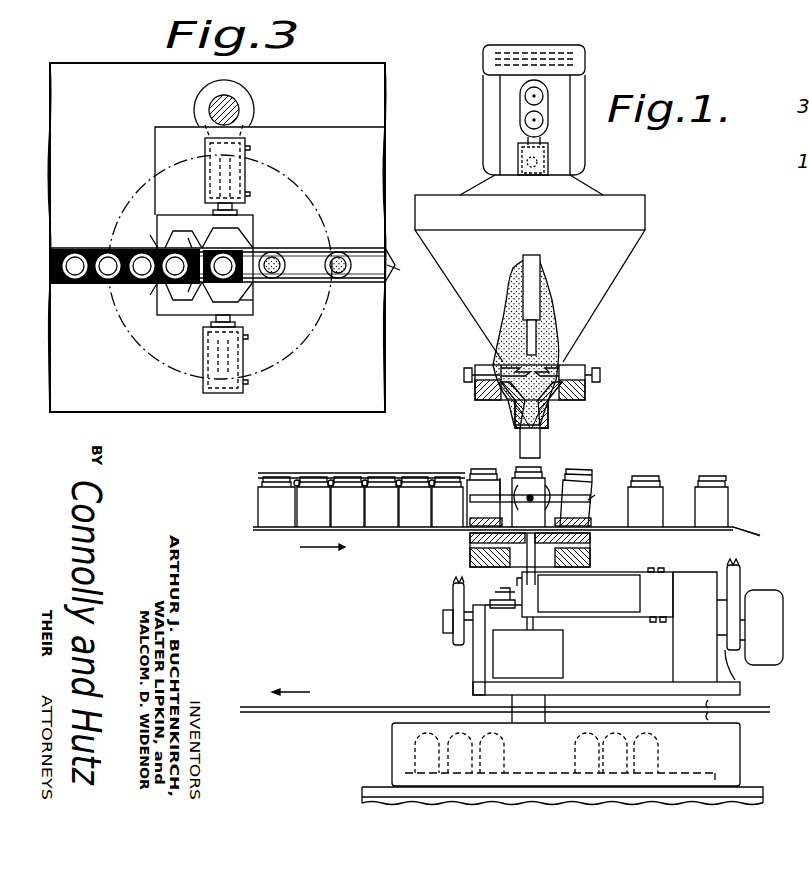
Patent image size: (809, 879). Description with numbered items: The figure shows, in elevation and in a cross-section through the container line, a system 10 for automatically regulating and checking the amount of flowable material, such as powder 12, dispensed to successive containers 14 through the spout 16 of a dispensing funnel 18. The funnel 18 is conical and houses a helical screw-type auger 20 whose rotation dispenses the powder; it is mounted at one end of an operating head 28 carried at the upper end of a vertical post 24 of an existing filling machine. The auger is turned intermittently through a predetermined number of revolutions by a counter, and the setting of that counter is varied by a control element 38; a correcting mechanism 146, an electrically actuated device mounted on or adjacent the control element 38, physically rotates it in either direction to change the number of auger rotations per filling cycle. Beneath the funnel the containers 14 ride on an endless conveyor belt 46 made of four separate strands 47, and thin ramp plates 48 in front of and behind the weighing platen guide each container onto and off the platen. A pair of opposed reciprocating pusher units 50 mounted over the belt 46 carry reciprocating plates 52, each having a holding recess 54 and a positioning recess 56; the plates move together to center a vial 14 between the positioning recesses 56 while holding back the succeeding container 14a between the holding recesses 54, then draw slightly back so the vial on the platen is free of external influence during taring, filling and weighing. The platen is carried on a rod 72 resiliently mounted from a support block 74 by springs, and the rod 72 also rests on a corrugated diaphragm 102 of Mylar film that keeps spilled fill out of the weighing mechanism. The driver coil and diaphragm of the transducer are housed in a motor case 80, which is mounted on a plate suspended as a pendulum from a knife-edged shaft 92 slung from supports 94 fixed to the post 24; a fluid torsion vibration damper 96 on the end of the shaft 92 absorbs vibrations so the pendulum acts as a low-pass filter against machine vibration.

In FIG. 1, the system 10 is at (348, 618).
In FIG. 1, the powder 12 is at (547, 350).
In FIG. 3, the container 14 is at (240, 246).
In FIG. 1, the container 14 is at (519, 468).
In FIG. 3, the succeeding container 14a is at (170, 247).
In FIG. 1, the succeeding container 14a is at (475, 469).
In FIG. 1, the spout 16 is at (552, 412).
In FIG. 3, the dispensing funnel 18 is at (320, 327).
In FIG. 1, the dispensing funnel 18 is at (622, 252).
In FIG. 1, the auger 20 is at (517, 400).
In FIG. 3, the post 24 is at (240, 112).
In FIG. 1, the post 24 is at (500, 705).
In FIG. 1, the operating head 28 is at (584, 88).
In FIG. 1, the control element 38 is at (525, 120).
In FIG. 3, the endless conveyor belt 46 is at (372, 248).
In FIG. 1, the endless conveyor belt 46 is at (335, 536).
In FIG. 3, the strands 47 is at (407, 269).
In FIG. 1, the strands 47 is at (733, 531).
In FIG. 3, the ramp plates 48 is at (150, 284).
In FIG. 1, the ramp plates 48 is at (480, 526).
In FIG. 3, the pusher units 50 is at (246, 177).
In FIG. 1, the pusher units 50 is at (547, 490).
In FIG. 3, the reciprocating plates 52 is at (253, 308).
In FIG. 1, the reciprocating plates 52 is at (571, 498).
In FIG. 3, the holding recess 54 is at (150, 235).
In FIG. 3, the positioning recess 56 is at (192, 238).
In FIG. 1, the rod 72 is at (545, 596).
In FIG. 1, the support block 74 is at (686, 580).
In FIG. 1, the motor case 80 is at (565, 664).
In FIG. 1, the knife-edged shaft 92 is at (443, 620).
In FIG. 1, the supports 94 is at (452, 585).
In FIG. 1, the vibration damper 96 is at (783, 658).
In FIG. 1, the corrugated diaphragm 102 is at (560, 558).
In FIG. 1, the correcting mechanism 146 is at (550, 170).